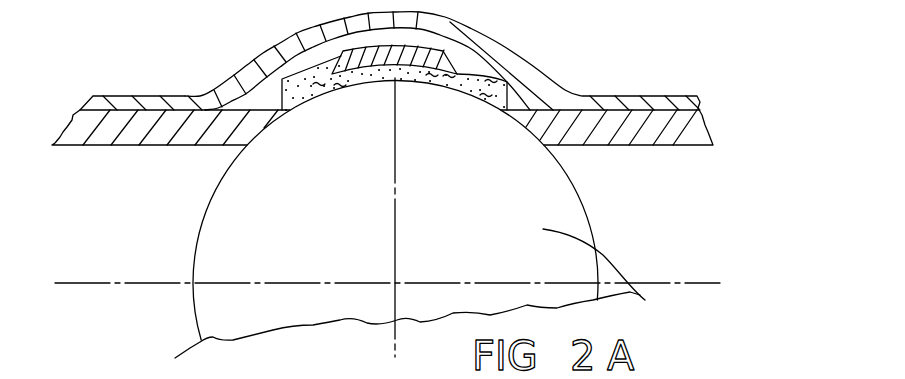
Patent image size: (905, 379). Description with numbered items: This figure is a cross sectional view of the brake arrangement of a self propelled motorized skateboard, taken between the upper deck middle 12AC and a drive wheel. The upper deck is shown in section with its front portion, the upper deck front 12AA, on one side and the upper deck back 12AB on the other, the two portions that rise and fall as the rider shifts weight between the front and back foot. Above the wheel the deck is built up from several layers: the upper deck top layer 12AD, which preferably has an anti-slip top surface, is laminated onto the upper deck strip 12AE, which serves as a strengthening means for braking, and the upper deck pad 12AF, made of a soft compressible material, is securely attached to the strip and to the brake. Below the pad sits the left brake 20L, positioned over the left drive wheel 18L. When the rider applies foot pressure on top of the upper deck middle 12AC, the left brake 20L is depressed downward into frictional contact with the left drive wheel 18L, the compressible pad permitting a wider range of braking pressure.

The upper deck front 12AA is at (148, 127).
The upper deck back 12AB is at (661, 131).
The upper deck middle 12AC is at (438, 24).
The upper deck top layer 12AD is at (122, 99).
The upper deck strip 12AE is at (502, 44).
The upper deck pad 12AF is at (490, 92).
The left brake 20L is at (300, 55).
The left drive wheel 18L is at (663, 290).